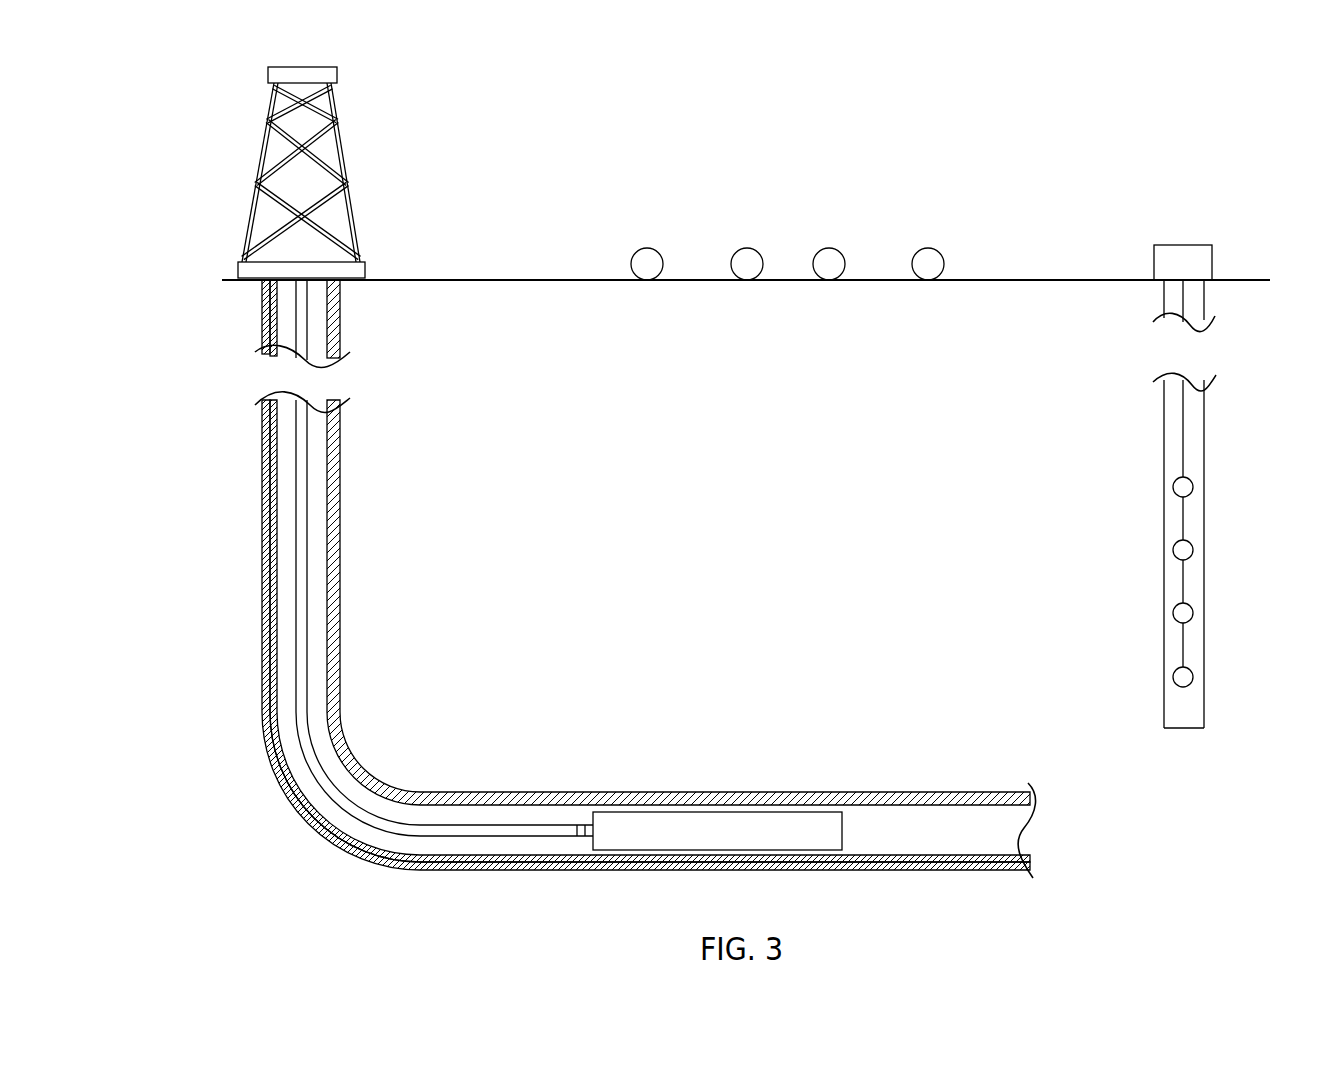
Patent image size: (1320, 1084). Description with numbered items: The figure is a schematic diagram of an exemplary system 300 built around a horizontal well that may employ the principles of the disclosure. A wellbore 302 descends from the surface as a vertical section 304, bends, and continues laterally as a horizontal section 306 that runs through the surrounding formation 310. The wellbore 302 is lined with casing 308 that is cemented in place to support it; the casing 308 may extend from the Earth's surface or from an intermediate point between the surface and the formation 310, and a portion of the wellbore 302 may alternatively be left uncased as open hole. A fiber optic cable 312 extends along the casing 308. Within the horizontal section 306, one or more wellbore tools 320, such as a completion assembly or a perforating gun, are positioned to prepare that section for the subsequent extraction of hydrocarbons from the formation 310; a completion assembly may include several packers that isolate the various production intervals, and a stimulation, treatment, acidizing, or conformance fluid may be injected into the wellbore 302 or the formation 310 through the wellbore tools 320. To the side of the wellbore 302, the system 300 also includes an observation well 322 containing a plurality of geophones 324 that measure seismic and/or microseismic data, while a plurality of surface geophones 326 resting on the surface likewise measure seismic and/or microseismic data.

The system 300 is at (182, 65).
The wellbore 302 is at (576, 579).
The vertical section 304 is at (221, 670).
The horizontal section 306 is at (593, 905).
The casing 308 is at (340, 545).
The formation 310 is at (537, 461).
The fiber optic cable 312 is at (293, 812).
The wellbore tools 320 is at (740, 812).
The observation well 322 is at (1130, 439).
The geophones 324 is at (1192, 482).
The surface geophones 326 is at (736, 253).